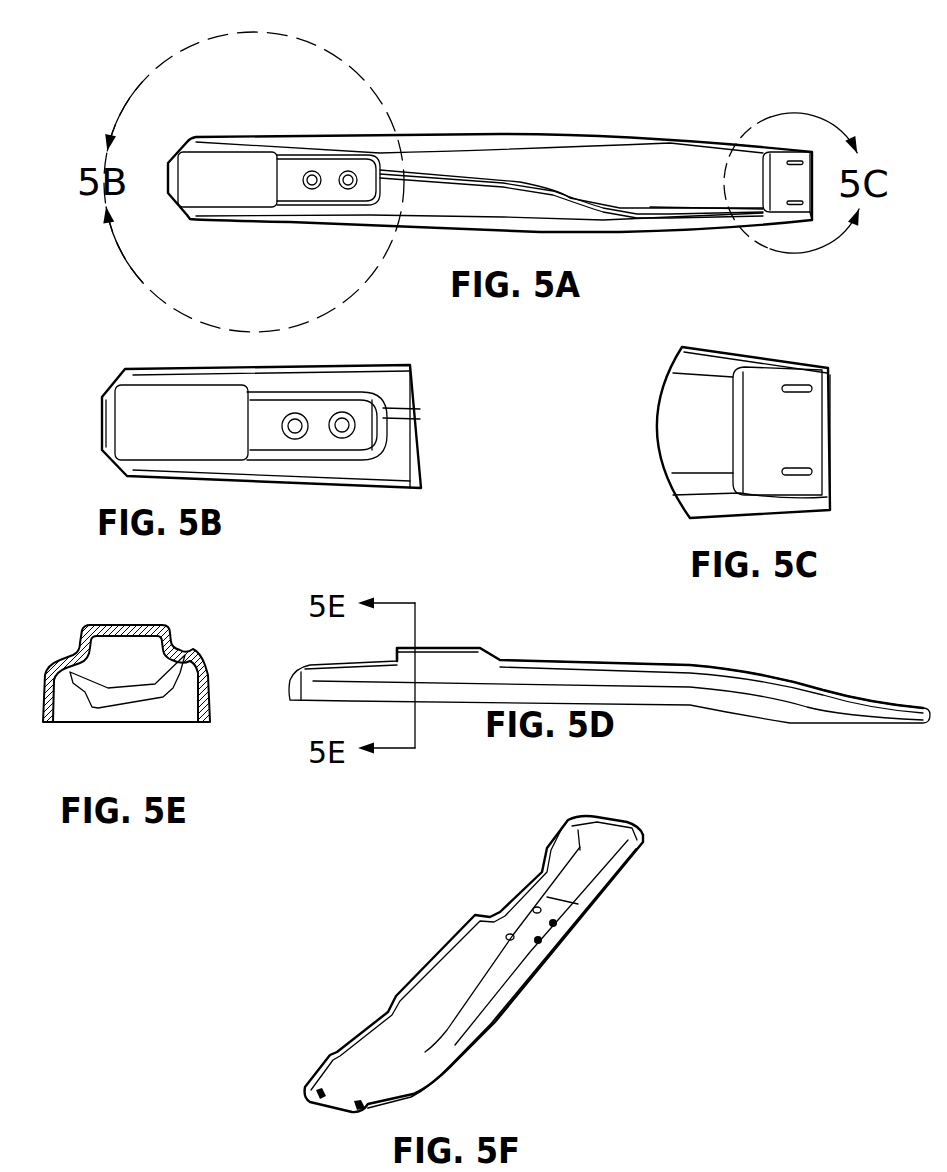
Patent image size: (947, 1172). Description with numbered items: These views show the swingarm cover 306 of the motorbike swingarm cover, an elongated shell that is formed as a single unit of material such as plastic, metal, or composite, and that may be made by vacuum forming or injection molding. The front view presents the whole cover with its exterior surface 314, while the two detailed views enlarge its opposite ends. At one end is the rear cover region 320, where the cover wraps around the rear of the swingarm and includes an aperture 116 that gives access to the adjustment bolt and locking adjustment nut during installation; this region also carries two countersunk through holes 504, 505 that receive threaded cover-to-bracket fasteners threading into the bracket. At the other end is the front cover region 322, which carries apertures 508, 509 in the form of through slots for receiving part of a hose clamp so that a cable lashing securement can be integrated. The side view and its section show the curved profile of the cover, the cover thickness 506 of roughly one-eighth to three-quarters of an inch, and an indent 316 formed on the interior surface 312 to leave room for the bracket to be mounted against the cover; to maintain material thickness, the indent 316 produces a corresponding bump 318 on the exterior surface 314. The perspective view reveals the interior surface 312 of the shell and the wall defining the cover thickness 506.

In FIG. 5A, the swingarm cover 306 is at (640, 130).
In FIG. 5D, the swingarm cover 306 is at (768, 669).
In FIG. 5F, the swingarm cover 306 is at (479, 1048).
In FIG. 5A, the exterior surface 314 is at (593, 170).
In FIG. 5B, the rear cover region 320 is at (118, 346).
In FIG. 5B, the aperture 116 is at (110, 457).
In FIG. 5B, the countersunk through hole 504 is at (294, 442).
In FIG. 5B, the countersunk through hole 505 is at (343, 442).
In FIG. 5C, the front cover region 322 is at (832, 336).
In FIG. 5C, the aperture 508 is at (806, 398).
In FIG. 5C, the aperture 509 is at (816, 479).
In FIG. 5E, the bump 318 is at (108, 619).
In FIG. 5E, the indent 316 is at (122, 644).
In FIG. 5F, the cover thickness 506 is at (465, 978).
In FIG. 5F, the interior surface 312 is at (425, 1030).